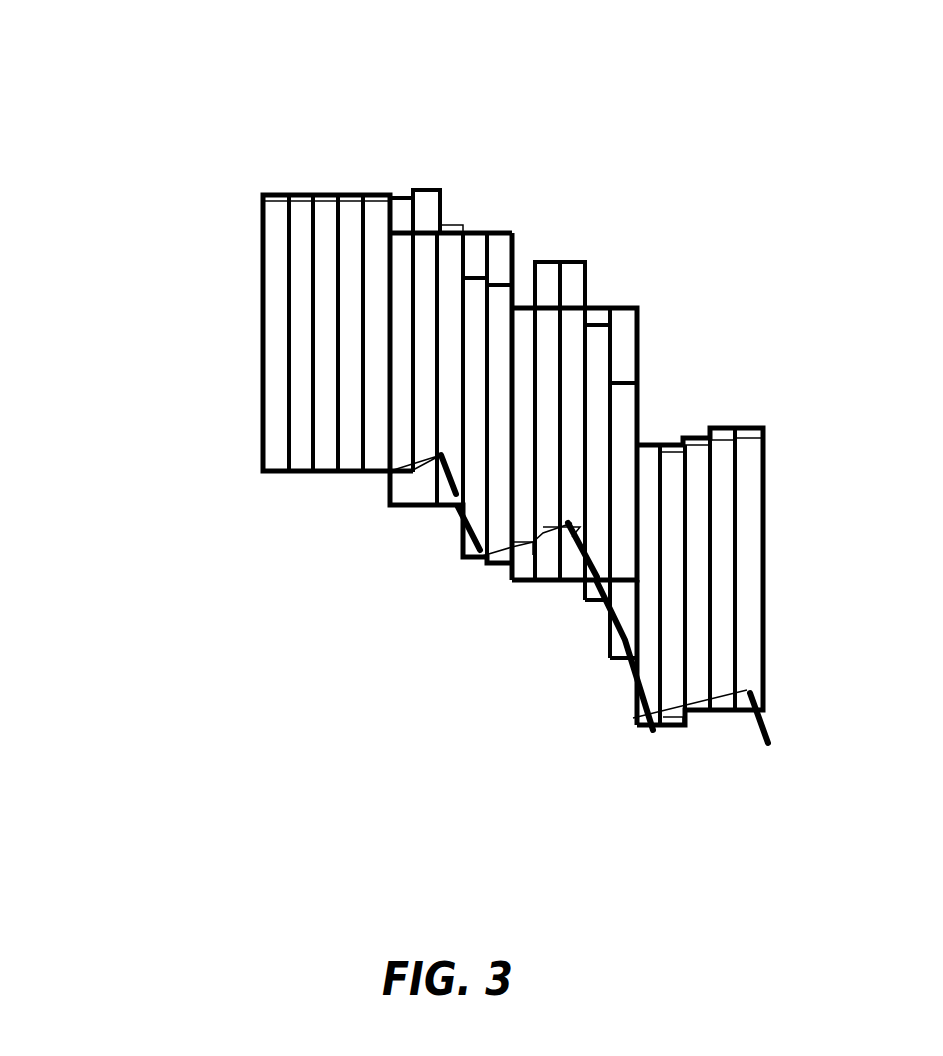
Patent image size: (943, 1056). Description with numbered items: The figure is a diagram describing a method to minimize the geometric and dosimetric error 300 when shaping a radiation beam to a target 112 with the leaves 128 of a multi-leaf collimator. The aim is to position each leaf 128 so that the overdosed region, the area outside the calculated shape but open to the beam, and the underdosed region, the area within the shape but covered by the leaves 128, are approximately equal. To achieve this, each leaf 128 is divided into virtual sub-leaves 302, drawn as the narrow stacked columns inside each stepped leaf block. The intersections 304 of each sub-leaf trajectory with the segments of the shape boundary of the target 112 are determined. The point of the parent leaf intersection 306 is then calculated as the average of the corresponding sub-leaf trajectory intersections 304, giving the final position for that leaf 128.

The method to minimize the geometric and dosimetric error 300 is at (127, 138).
The sub-leaf 302 is at (573, 265).
The leaf 128 is at (608, 306).
The sub-leaf trajectory intersection 304 is at (543, 533).
The parent leaf intersection 306 is at (588, 593).
The target 112 is at (765, 723).